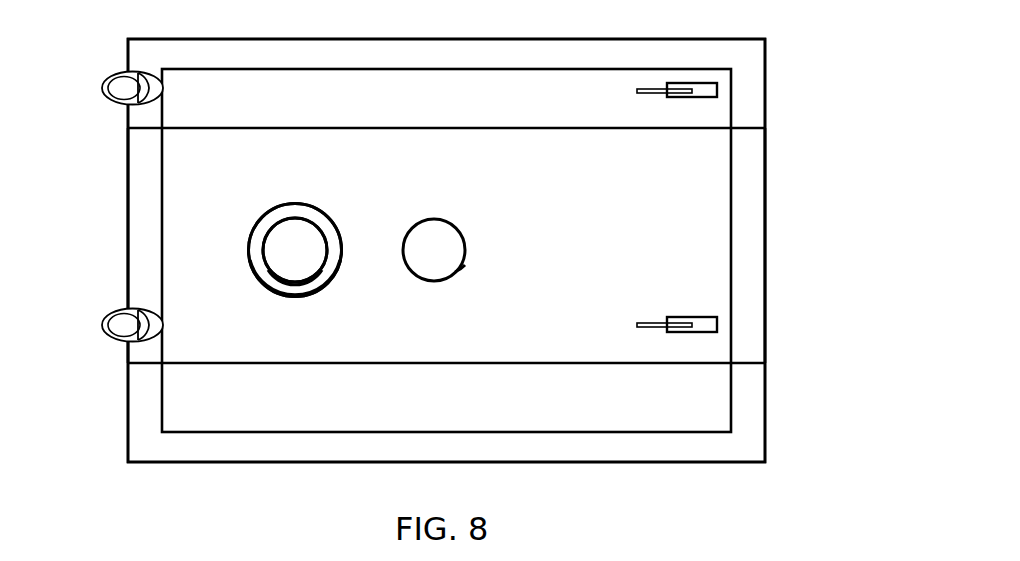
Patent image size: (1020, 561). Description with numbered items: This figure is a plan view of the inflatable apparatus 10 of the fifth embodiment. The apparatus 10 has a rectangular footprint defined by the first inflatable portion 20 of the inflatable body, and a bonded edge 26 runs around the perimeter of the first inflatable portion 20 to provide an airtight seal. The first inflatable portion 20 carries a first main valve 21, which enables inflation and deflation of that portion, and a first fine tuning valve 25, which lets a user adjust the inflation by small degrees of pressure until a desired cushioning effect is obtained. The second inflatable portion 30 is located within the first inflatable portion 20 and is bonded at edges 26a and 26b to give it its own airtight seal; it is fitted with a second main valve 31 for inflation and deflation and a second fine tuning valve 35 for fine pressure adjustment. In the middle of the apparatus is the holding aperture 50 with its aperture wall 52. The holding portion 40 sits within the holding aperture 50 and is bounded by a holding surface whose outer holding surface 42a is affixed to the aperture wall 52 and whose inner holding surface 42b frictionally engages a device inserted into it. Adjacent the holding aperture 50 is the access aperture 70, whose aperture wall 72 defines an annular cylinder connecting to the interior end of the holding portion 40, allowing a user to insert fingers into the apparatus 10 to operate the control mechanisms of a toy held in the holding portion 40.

The inflatable apparatus 10 is at (741, 504).
The first inflatable portion 20 is at (715, 415).
The first main valve 21 is at (102, 88).
The first fine tuning valve 25 is at (717, 90).
The bonded edge 26 is at (563, 462).
The bonded edge 26a is at (145, 212).
The bonded edge 26b is at (745, 172).
The second inflatable portion 30 is at (715, 233).
The second main valve 31 is at (102, 325).
The second fine tuning valve 35 is at (717, 323).
The holding portion 40 is at (335, 260).
The outer holding surface 42a is at (297, 302).
The inner holding surface 42b is at (315, 278).
The holding aperture 50 is at (297, 252).
The aperture wall 52 is at (343, 250).
The access aperture 70 is at (435, 250).
The aperture wall 72 is at (465, 265).